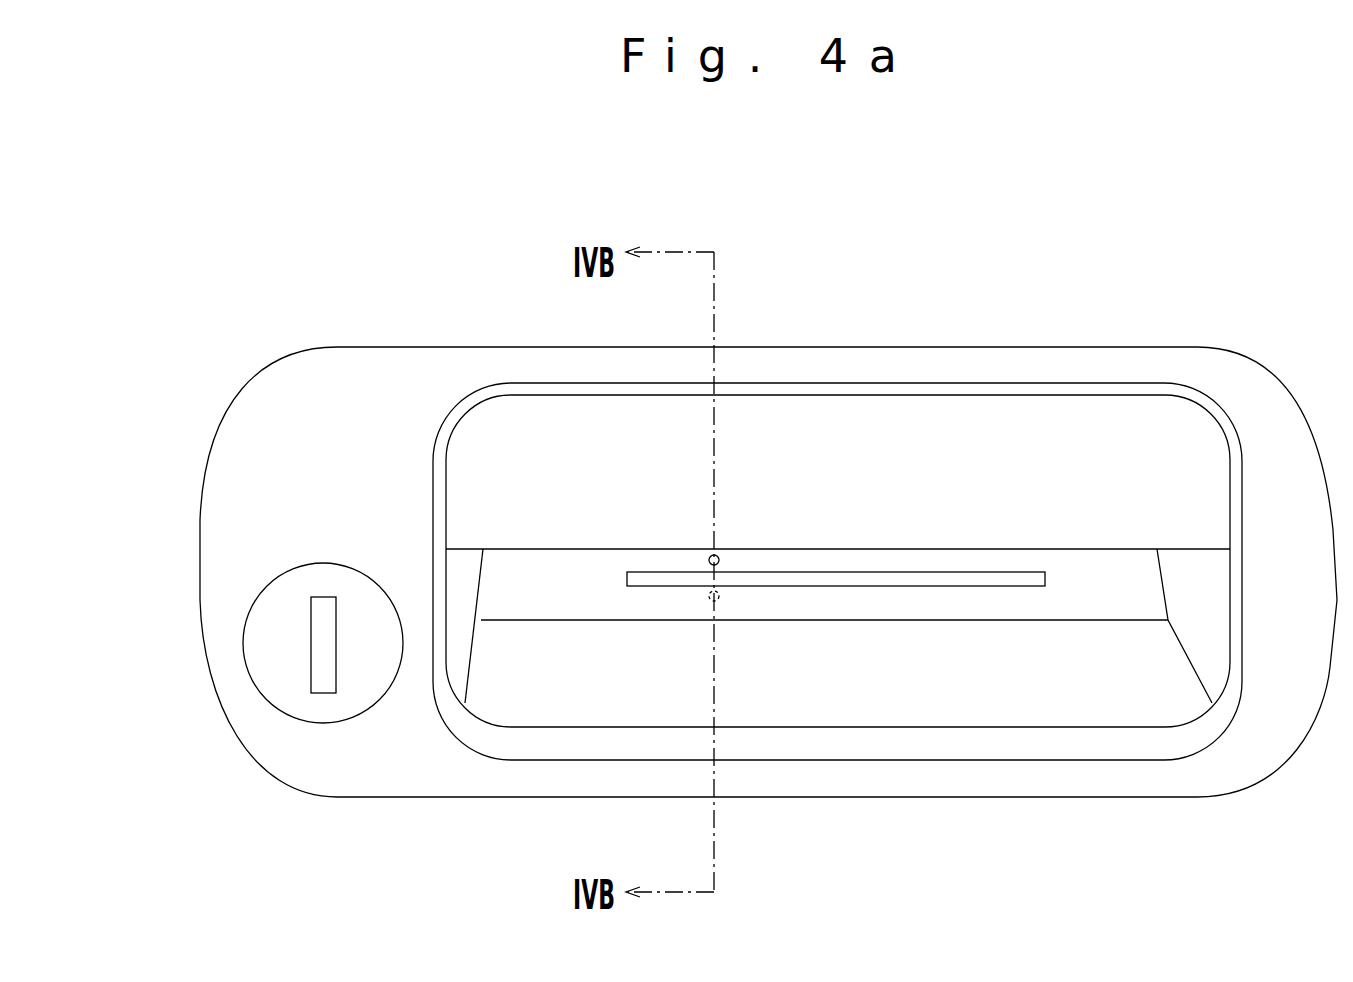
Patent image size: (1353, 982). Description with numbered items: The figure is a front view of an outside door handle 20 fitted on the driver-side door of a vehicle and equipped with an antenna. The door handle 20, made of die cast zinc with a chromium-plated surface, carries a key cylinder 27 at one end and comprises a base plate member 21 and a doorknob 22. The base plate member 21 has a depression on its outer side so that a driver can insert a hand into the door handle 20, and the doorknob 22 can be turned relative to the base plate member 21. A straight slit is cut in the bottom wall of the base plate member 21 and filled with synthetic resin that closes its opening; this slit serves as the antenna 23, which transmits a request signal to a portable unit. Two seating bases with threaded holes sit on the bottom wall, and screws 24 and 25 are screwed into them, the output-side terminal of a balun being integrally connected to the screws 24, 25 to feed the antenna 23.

The door handle 20 is at (978, 343).
The base plate member 21 is at (1078, 685).
The doorknob 22 is at (1107, 435).
The antenna 23 is at (1047, 579).
The screw 24 is at (720, 555).
The screw 25 is at (708, 600).
The key cylinder 27 is at (283, 578).